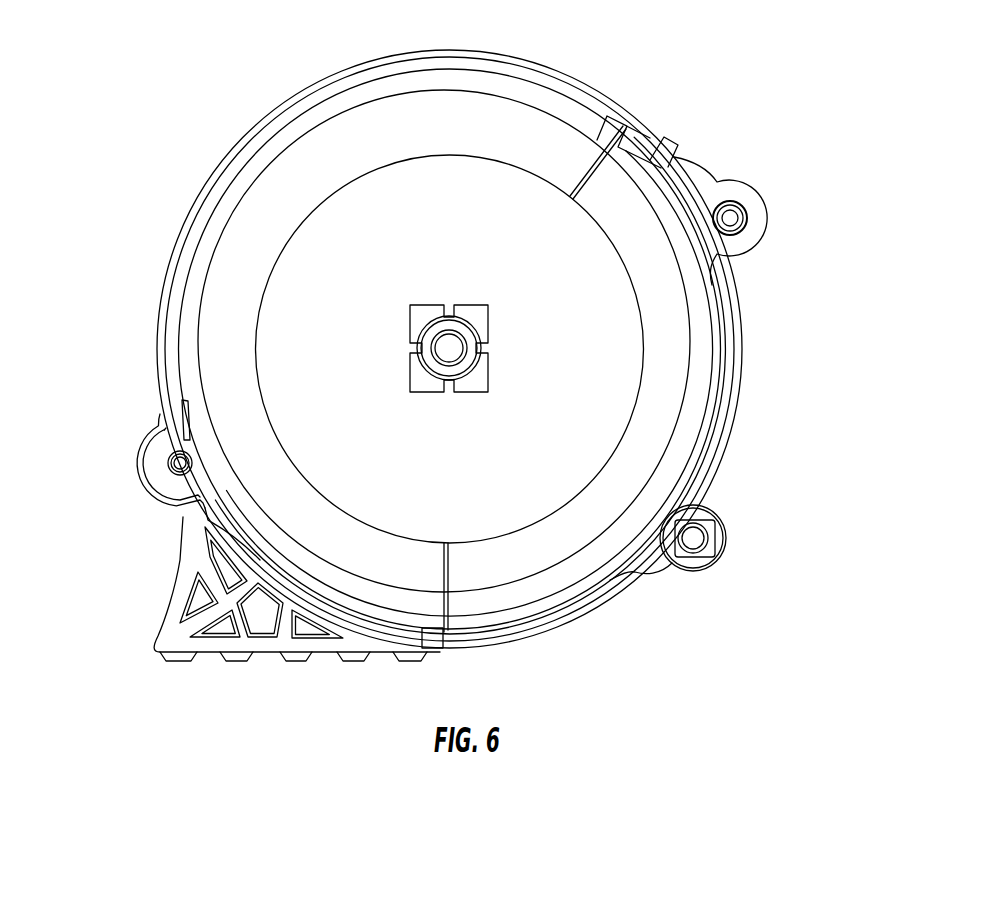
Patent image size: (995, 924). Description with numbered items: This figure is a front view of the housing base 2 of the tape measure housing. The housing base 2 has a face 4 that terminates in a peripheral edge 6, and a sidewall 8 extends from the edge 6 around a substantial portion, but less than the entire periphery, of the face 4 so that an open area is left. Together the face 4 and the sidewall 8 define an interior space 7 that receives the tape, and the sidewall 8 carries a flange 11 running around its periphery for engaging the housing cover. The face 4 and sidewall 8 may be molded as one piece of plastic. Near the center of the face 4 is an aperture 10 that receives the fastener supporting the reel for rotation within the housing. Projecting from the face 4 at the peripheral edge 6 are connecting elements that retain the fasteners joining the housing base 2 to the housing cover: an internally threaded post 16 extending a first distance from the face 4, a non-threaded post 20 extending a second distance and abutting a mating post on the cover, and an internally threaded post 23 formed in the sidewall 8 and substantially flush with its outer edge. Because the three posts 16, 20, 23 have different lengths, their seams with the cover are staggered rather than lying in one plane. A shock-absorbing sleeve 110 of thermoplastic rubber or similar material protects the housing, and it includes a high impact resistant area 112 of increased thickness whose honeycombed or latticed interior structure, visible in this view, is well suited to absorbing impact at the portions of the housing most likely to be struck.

The housing base 2 is at (712, 112).
The face 4 is at (665, 393).
The peripheral edge 6 is at (605, 600).
The interior space 7 is at (468, 452).
The sidewall 8 is at (170, 267).
The aperture 10 is at (455, 350).
The flange 11 is at (215, 193).
The internally threaded post 16 is at (742, 208).
The non-threaded post 20 is at (713, 517).
The internally threaded post 23 is at (185, 462).
The shock-absorbing sleeve 110 is at (190, 532).
The high impact resistant area 112 is at (178, 597).